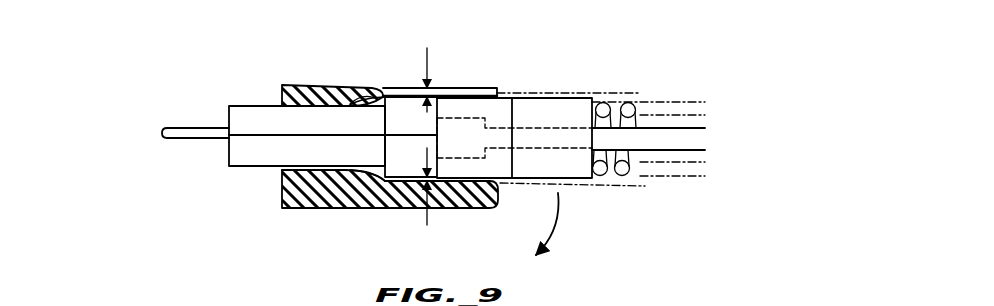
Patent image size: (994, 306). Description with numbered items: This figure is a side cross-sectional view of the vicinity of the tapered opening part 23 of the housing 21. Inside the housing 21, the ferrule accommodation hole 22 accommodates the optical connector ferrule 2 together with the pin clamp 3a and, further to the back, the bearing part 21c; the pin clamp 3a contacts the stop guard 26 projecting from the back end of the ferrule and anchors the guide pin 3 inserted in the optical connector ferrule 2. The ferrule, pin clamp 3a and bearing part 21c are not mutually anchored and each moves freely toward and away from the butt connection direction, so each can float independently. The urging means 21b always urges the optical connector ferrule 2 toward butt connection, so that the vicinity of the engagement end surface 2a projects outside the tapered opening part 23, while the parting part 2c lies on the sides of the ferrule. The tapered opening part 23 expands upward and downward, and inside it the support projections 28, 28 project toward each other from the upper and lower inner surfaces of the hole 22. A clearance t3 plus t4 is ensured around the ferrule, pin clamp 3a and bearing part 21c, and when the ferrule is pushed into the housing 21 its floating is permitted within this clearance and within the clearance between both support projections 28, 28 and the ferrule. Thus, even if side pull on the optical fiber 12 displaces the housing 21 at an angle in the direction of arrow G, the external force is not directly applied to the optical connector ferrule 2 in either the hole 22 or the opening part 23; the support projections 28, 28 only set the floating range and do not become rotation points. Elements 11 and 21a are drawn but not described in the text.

The optical connector ferrule 2 is at (236, 106).
The engagement end surface 2a is at (230, 147).
The parting part 2c is at (243, 133).
The guide pin 3 is at (178, 139).
The pin clamp 3a is at (509, 180).
The internal passage 11 is at (497, 118).
The optical fiber 12 is at (675, 133).
The housing 21 is at (466, 88).
The sheet end portion 21a is at (309, 85).
The urging means 21b is at (627, 103).
The bearing part 21c is at (574, 180).
The ferrule accommodation hole 22 is at (480, 205).
The tapered opening part 23 is at (285, 172).
The stop guard 26 is at (402, 97).
The support projections 28 is at (364, 97).
The clearance t3 is at (437, 80).
The clearance t4 is at (437, 193).
The direction of displacement G is at (540, 240).